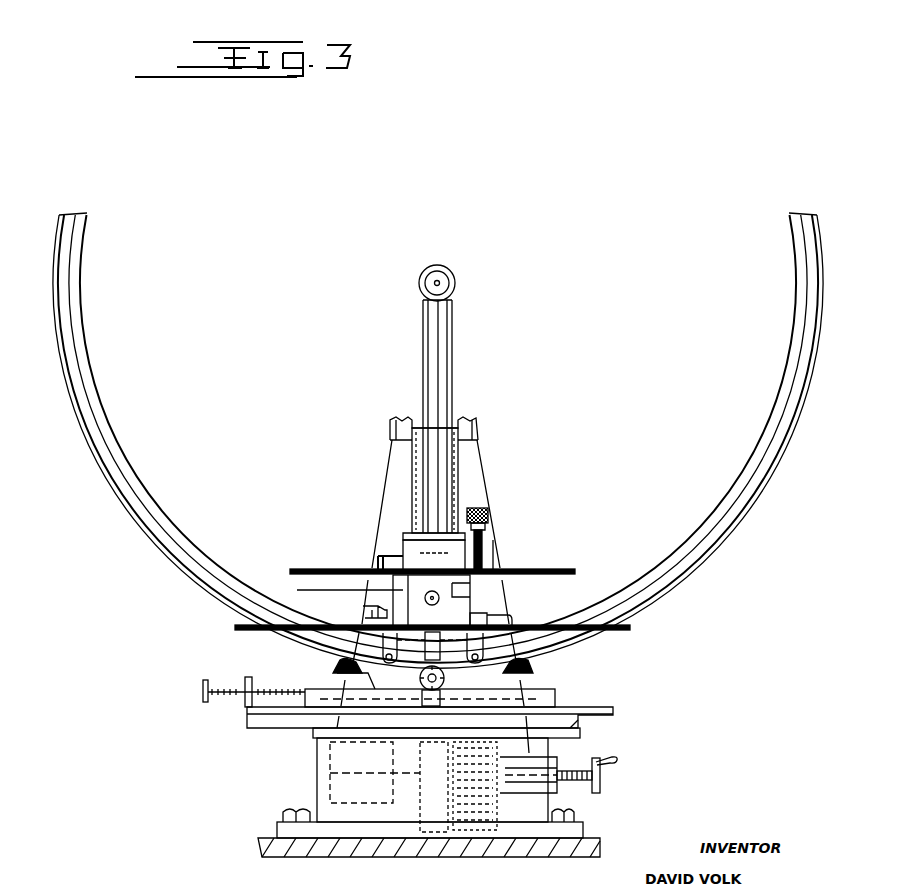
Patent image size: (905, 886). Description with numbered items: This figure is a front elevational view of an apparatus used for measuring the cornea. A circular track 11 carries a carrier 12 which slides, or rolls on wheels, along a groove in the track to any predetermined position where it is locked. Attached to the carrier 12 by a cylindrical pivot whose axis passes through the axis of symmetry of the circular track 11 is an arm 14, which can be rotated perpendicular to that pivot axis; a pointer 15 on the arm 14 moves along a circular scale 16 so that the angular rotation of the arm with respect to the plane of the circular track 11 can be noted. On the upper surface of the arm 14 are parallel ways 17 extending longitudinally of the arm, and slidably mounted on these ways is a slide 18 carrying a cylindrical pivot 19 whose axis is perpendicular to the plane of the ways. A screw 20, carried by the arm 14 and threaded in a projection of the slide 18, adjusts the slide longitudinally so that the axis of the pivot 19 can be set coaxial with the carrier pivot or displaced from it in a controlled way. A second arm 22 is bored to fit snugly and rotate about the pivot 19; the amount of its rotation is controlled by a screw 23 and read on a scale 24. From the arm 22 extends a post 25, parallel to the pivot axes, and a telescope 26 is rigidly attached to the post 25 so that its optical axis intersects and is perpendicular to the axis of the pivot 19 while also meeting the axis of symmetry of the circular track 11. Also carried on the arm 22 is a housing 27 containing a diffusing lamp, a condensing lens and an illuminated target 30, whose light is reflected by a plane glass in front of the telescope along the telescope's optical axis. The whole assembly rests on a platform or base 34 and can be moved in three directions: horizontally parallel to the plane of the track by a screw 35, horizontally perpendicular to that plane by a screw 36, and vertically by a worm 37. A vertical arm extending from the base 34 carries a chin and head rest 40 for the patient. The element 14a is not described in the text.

The circular track 11 is at (788, 364).
The carrier 12 is at (525, 640).
The arm 14 is at (465, 594).
The cord anchor 14a is at (362, 605).
The pointer 15 is at (490, 615).
The circular scale 16 is at (628, 632).
The parallel ways 17 is at (340, 592).
The slide 18 is at (395, 583).
The cylindrical pivot 19 is at (440, 560).
The screw 20 is at (500, 572).
The arm 22 is at (392, 541).
The screw 23 is at (490, 516).
The scale 24 is at (356, 568).
The post 25 is at (448, 360).
The telescope 26 is at (455, 283).
The housing 27 is at (460, 460).
The target 30 is at (458, 420).
The platform or base 34 is at (317, 758).
The screw 35 is at (206, 703).
The screw 36 is at (518, 679).
The worm 37 is at (440, 775).
The chin and head rest 40 is at (384, 471).